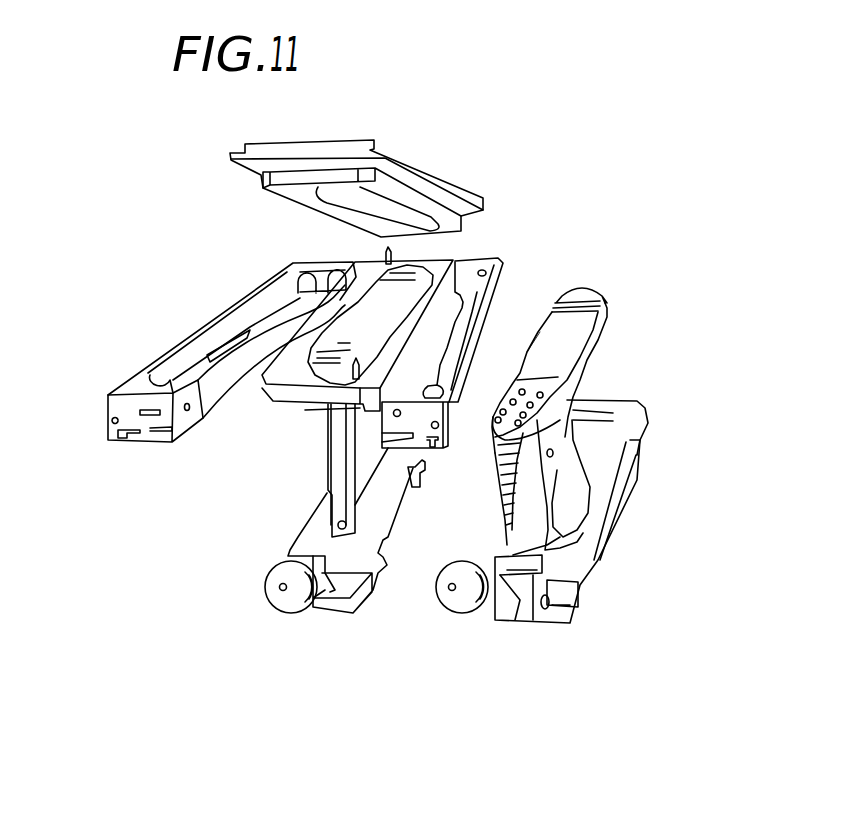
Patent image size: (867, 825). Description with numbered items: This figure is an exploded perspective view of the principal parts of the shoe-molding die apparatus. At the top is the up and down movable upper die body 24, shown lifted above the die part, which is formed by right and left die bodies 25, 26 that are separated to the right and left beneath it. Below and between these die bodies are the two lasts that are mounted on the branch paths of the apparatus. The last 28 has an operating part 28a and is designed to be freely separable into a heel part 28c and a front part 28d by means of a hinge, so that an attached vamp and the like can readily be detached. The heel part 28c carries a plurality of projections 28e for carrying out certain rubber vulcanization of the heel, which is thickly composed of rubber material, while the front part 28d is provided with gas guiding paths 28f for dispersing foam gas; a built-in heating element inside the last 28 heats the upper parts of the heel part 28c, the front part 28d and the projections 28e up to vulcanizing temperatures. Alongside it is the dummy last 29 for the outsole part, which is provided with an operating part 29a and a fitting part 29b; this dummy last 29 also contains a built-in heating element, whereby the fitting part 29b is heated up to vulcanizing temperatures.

The upper die body 24 is at (380, 140).
The left die body 25 is at (233, 302).
The right die body 26 is at (502, 280).
The last 28 is at (597, 370).
The operating part 28a is at (447, 603).
The heel part 28c is at (493, 437).
The front part 28d is at (580, 333).
The projections 28e is at (545, 392).
The gas guiding paths 28f is at (587, 287).
The dummy last for the outsole part 29 is at (280, 383).
The operating part 29a is at (280, 603).
The fitting part 29b is at (325, 375).